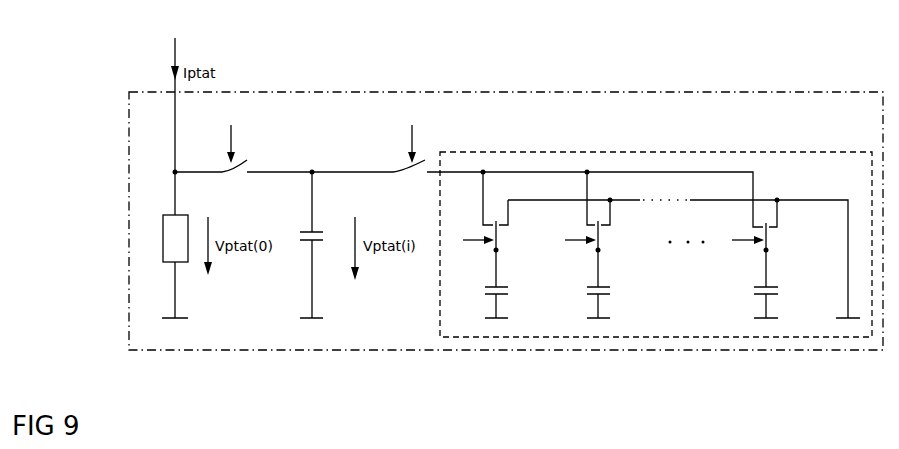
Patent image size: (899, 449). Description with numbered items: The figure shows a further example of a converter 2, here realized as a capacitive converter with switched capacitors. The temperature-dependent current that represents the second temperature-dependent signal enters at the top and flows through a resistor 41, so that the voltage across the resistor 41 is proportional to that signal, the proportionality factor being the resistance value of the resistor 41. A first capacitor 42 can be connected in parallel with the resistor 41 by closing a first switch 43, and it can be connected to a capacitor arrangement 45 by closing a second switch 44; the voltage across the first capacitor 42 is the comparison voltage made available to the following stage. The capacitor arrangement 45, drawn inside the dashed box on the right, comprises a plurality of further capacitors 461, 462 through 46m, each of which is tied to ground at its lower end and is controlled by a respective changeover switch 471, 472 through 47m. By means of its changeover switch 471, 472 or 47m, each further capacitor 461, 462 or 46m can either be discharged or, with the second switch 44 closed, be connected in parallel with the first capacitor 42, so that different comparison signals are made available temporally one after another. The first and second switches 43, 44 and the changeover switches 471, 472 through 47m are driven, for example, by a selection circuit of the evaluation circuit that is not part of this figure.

The converter 2 is at (417, 92).
The resistor 41 is at (160, 245).
The first capacitor 42 is at (322, 245).
The first switch 43 is at (234, 161).
The second switch 44 is at (409, 161).
The capacitor arrangement 45 is at (658, 152).
The further capacitor 461 is at (510, 299).
The further capacitor 462 is at (612, 299).
The further capacitor 46m is at (781, 299).
The changeover switch 471 is at (496, 229).
The changeover switch 472 is at (598, 229).
The changeover switch 47m is at (767, 243).